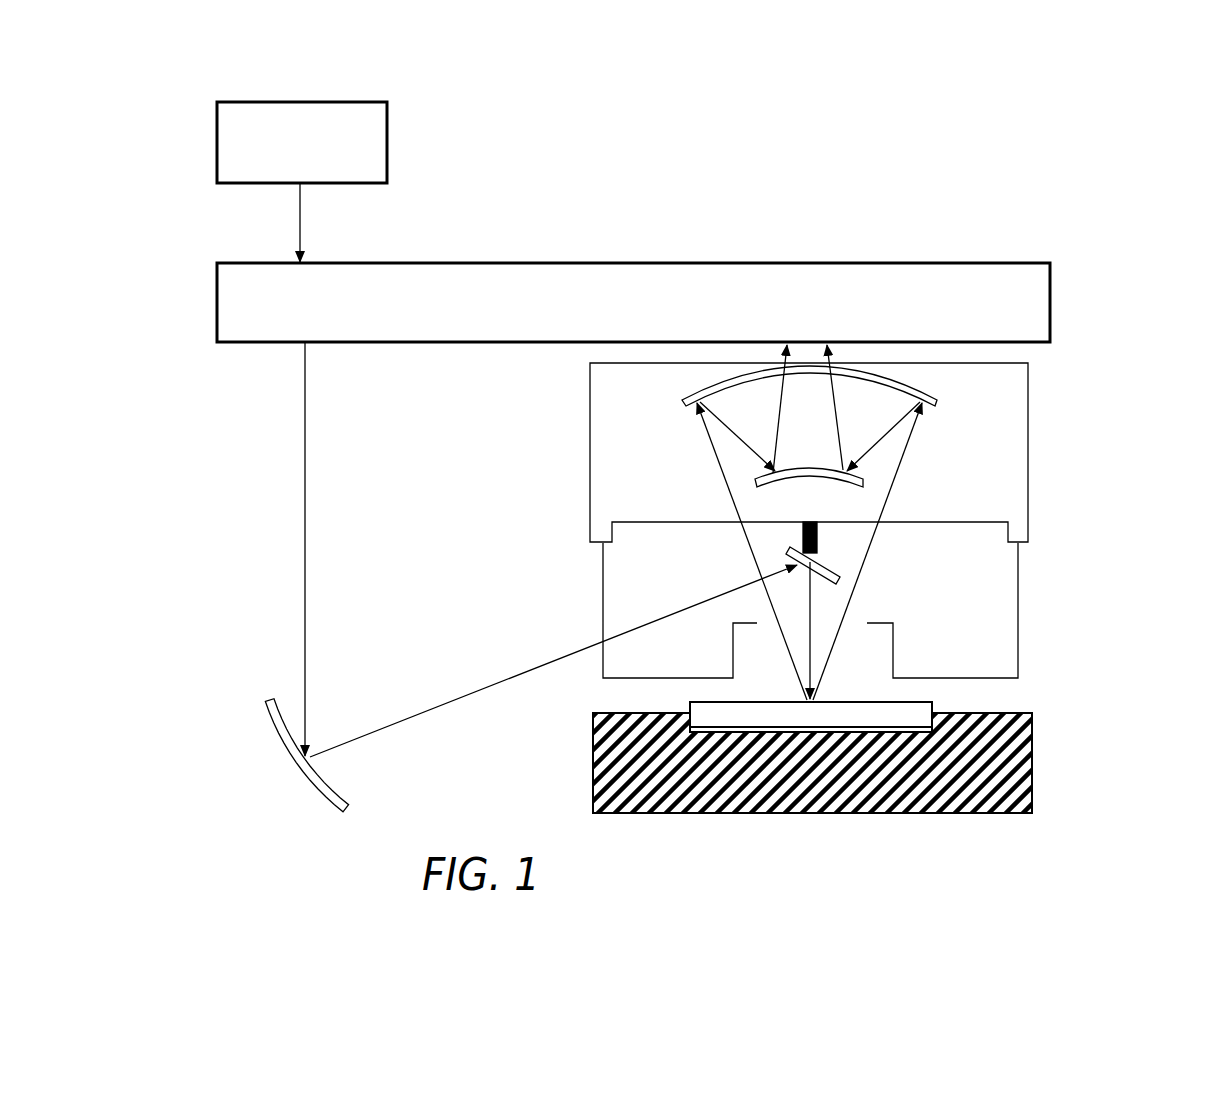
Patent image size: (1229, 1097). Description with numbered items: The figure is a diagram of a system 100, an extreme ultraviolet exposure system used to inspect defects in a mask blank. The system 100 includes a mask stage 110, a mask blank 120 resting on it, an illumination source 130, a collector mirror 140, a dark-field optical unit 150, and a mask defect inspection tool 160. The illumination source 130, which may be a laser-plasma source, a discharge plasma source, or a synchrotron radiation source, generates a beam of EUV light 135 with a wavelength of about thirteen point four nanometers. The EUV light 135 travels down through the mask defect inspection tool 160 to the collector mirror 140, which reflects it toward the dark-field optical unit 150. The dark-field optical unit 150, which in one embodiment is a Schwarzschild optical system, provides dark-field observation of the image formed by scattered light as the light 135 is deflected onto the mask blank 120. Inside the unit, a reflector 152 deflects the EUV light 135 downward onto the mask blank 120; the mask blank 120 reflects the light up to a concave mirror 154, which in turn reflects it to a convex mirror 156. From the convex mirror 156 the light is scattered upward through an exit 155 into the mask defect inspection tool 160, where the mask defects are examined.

The system 100 is at (1080, 106).
The mask stage 110 is at (593, 778).
The mask blank 120 is at (935, 700).
The illumination source 130 is at (372, 105).
The EUV light beam 135 is at (302, 513).
The collector mirror 140 is at (254, 755).
The dark-field optical unit 150 is at (1022, 418).
The reflector 152 is at (788, 548).
The concave mirror 154 is at (680, 402).
The exit 155 is at (841, 352).
The convex mirror 156 is at (754, 483).
The mask defect inspection tool 160 is at (1025, 268).